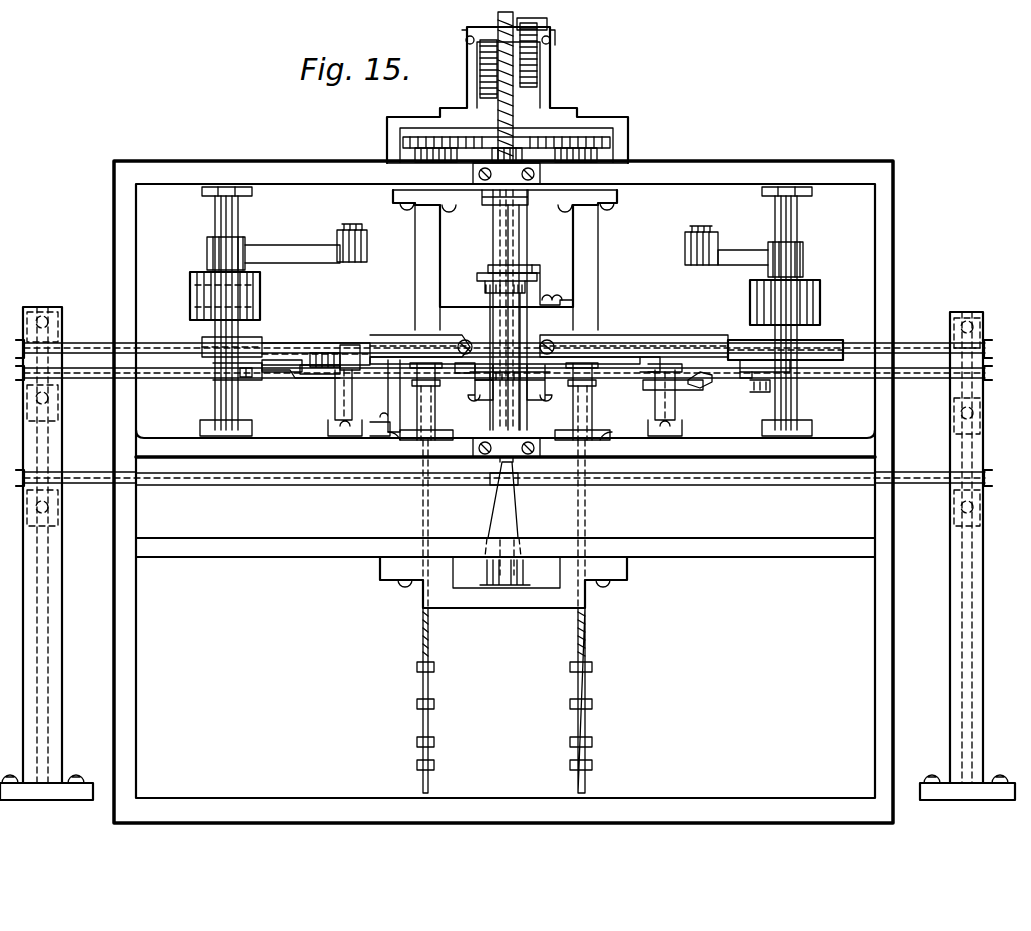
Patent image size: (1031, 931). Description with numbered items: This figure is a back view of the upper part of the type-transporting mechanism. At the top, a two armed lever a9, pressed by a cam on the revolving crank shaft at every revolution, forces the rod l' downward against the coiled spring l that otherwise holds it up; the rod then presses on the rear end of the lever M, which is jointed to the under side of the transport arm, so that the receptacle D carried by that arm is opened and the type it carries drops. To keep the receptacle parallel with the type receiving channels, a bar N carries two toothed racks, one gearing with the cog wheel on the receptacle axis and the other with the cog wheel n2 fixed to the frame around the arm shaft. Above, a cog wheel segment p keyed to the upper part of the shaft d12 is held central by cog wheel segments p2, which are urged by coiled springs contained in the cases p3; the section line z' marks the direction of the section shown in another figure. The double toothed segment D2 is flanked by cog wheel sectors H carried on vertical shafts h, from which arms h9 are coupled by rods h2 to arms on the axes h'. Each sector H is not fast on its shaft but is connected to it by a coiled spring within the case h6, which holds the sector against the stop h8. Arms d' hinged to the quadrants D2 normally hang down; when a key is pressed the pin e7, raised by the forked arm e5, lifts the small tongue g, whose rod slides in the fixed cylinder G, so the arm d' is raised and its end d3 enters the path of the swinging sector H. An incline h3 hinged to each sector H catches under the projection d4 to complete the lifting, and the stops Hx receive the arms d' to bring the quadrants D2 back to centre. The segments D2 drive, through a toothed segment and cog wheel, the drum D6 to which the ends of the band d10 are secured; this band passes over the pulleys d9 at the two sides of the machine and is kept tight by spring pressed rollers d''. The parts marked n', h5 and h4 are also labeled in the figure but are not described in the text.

The two armed lever a9 is at (482, 78).
The coiled spring l is at (509, 87).
The cog wheel segments p2 is at (405, 137).
The spring cases p3 is at (430, 160).
The cog wheel segment p is at (516, 157).
The section line Z'—Z' z' is at (496, 122).
The vertical shafts h is at (506, 311).
The arms h9 is at (277, 258).
The rods h2 is at (368, 242).
The spring case h6 is at (825, 296).
The rod l' is at (514, 310).
The sleeve n' is at (526, 317).
The cog wheel n2 is at (490, 268).
The bar N is at (530, 264).
The lever M is at (480, 287).
The arms d' is at (452, 361).
The receptacle D is at (410, 352).
The double toothed segment D2 is at (602, 343).
The cog wheel sectors H is at (305, 342).
The pinion h5 is at (323, 353).
The end of arm d' d3 is at (362, 347).
The bar h4 is at (325, 370).
The stop h8 is at (280, 372).
The incline h3 is at (350, 408).
The axes h' is at (740, 381).
The rollers d'' is at (491, 391).
The projection d4 is at (385, 376).
The small tongue g is at (462, 372).
The double wheel or drum D6 is at (505, 385).
The shaft d12 is at (532, 396).
The fixed cylinder G is at (417, 400).
The stops Hx is at (410, 434).
The pulleys d9 is at (62, 348).
The band d10 is at (172, 352).
The pin e7 is at (422, 506).
The forked arm e5 is at (416, 668).